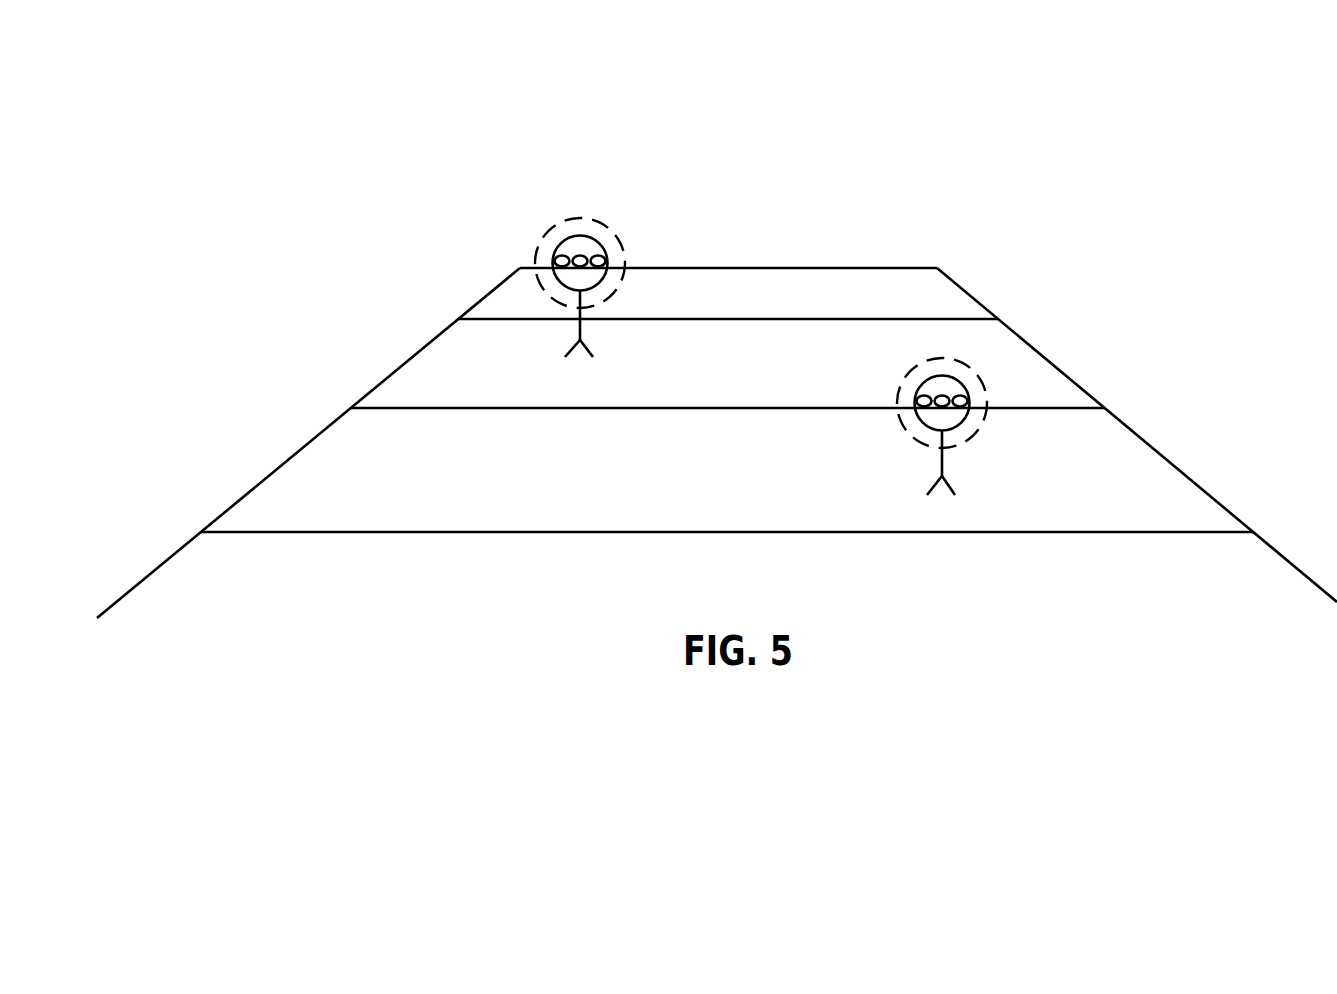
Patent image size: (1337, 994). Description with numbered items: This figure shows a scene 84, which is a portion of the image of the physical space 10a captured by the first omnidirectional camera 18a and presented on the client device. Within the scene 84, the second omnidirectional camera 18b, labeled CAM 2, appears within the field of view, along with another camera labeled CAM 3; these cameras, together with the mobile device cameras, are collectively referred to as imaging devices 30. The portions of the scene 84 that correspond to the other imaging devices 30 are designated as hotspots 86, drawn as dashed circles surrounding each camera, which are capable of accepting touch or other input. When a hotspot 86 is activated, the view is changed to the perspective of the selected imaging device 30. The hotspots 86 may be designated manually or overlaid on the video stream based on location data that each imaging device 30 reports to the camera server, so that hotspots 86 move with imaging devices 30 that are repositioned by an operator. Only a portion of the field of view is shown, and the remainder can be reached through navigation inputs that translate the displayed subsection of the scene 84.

The scene 84 is at (860, 92).
The physical space 10a is at (1003, 319).
The hotspot 86 is at (543, 237).
The first omnidirectional camera 18a is at (577, 338).
The second omnidirectional camera 18b is at (940, 473).
The imaging device 30 is at (766, 366).